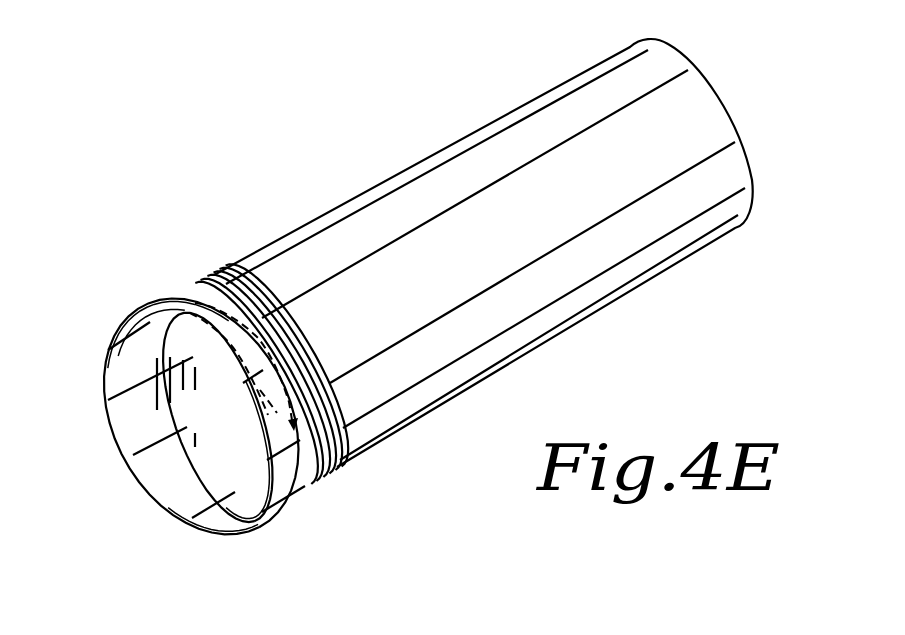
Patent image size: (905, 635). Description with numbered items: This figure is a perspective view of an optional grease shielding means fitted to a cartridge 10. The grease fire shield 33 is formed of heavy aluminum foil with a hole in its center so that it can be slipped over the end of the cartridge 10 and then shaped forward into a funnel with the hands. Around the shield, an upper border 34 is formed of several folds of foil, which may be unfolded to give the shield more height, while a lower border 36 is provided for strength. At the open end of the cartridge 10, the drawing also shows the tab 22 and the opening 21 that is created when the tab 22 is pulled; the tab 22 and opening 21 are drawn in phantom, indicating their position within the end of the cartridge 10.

The cartridge 10 is at (497, 146).
The opening 21 is at (178, 297).
The tab 22 is at (158, 398).
The grease fire shield 33 is at (322, 489).
The upper border 34 is at (337, 443).
The lower border 36 is at (288, 508).